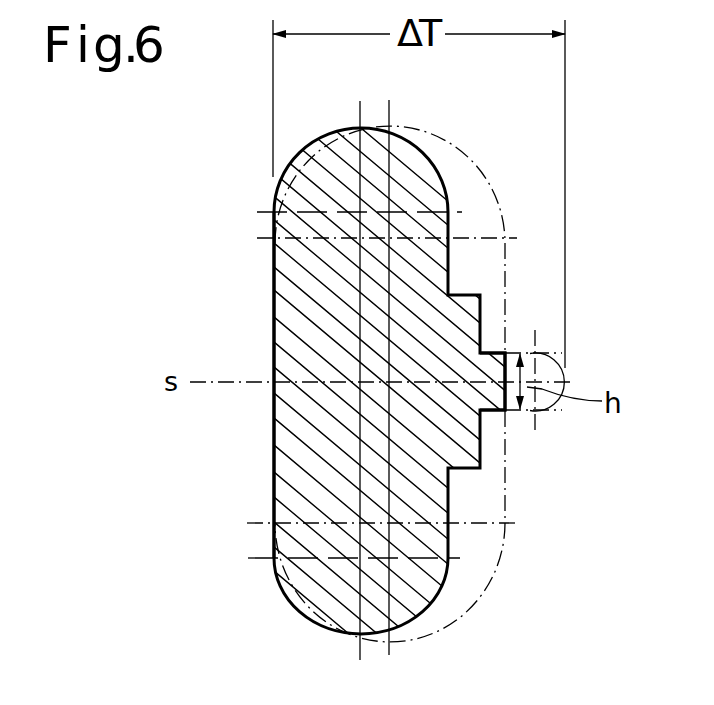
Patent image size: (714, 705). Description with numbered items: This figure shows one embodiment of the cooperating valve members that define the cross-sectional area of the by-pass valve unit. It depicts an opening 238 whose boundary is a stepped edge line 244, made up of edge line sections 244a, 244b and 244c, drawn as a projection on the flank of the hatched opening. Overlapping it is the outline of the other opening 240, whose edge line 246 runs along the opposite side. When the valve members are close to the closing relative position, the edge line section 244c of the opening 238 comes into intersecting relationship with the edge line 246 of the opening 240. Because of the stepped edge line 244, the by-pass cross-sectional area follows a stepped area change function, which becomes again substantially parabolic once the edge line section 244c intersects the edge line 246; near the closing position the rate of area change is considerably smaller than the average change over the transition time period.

The opening 238 is at (328, 131).
The opening 240 is at (490, 182).
The stepped edge line 244 is at (560, 405).
The edge line section 244a is at (450, 262).
The edge line section 244b is at (483, 413).
The edge line section 244c is at (548, 354).
The edge line 246 is at (274, 445).